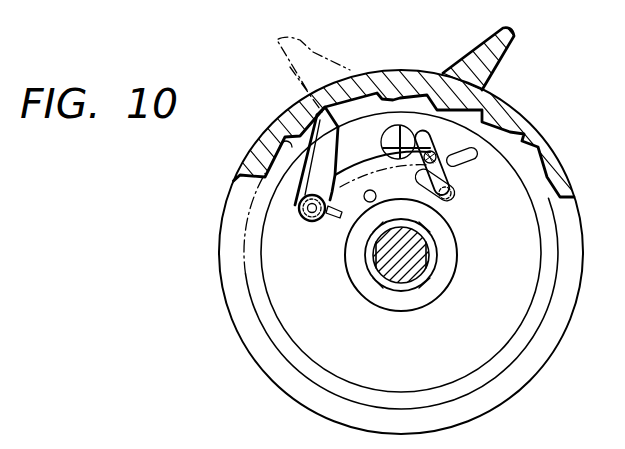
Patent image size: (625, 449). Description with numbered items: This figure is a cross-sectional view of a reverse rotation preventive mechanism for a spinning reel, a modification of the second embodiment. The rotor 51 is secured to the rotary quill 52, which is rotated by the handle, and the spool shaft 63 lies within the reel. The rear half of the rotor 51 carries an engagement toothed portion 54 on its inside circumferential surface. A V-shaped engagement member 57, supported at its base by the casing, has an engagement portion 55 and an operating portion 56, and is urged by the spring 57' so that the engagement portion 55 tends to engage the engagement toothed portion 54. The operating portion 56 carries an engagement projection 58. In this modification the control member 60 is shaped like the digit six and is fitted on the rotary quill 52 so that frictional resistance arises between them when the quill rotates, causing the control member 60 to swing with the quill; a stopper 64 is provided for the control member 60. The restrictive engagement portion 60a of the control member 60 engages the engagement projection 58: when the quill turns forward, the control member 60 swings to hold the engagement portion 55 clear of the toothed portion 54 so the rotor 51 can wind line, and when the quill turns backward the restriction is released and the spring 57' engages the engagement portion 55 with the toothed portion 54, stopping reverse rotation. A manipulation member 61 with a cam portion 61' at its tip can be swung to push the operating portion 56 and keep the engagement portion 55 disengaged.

The rotor 51 is at (528, 378).
The rotary quill 52 is at (430, 277).
The engagement toothed portion 54 is at (262, 132).
The engagement portion 55 is at (327, 112).
The operating portion 56 is at (363, 150).
The V-shaped engagement member 57 is at (264, 166).
The spring 57' is at (248, 211).
The engagement projection 58 is at (480, 167).
The control member 60 is at (448, 248).
The restrictive engagement portion 60a is at (437, 137).
The manipulation member 61 is at (511, 53).
The cam portion 61' is at (370, 87).
The spool shaft 63 is at (367, 270).
The stopper 64 is at (365, 203).